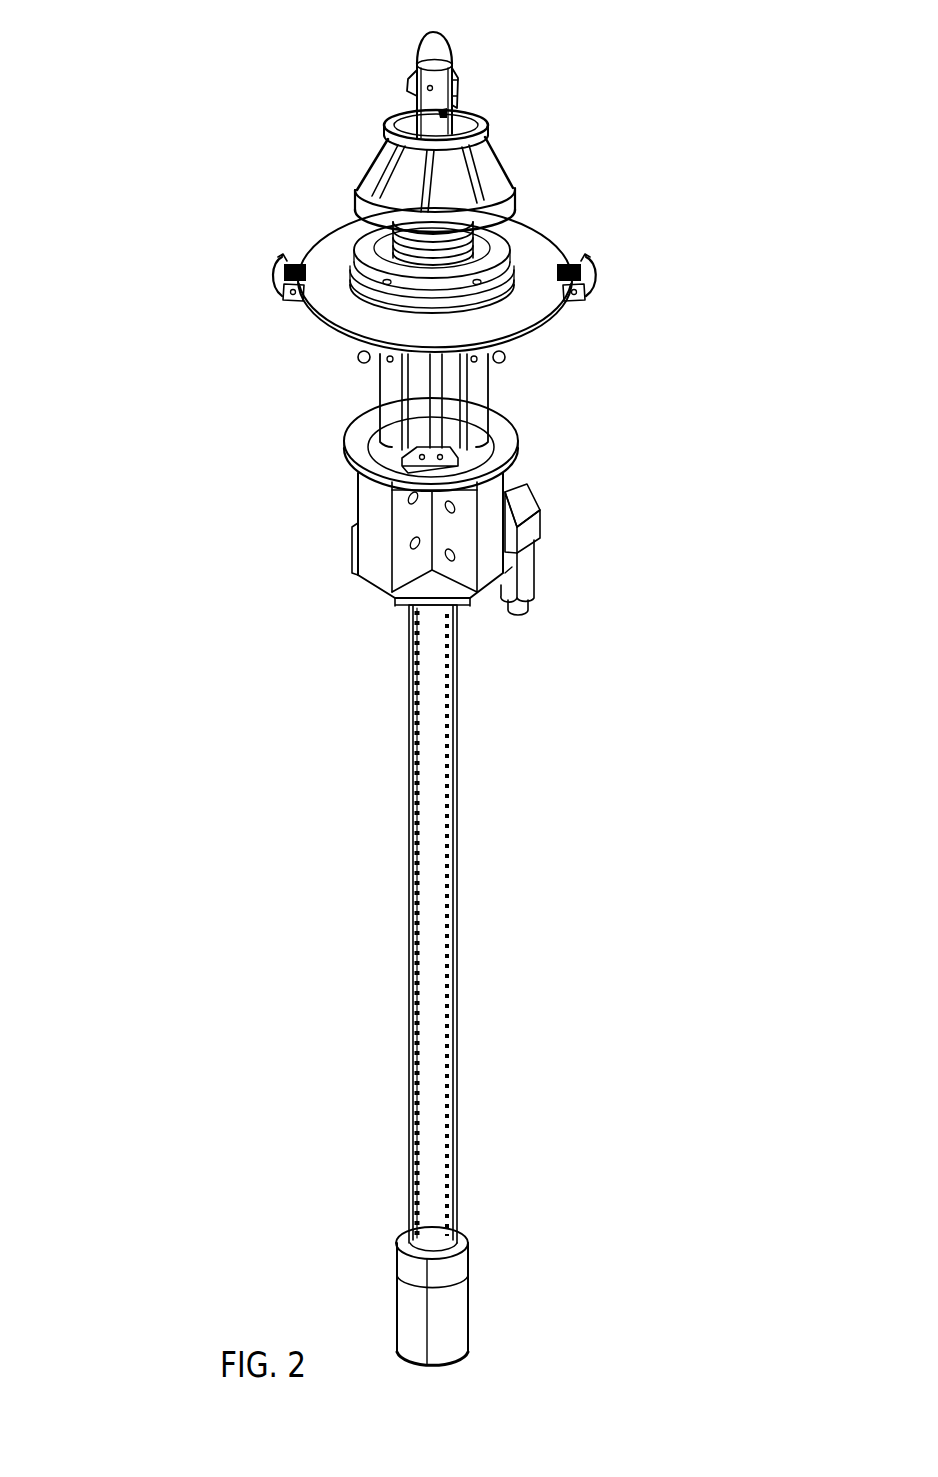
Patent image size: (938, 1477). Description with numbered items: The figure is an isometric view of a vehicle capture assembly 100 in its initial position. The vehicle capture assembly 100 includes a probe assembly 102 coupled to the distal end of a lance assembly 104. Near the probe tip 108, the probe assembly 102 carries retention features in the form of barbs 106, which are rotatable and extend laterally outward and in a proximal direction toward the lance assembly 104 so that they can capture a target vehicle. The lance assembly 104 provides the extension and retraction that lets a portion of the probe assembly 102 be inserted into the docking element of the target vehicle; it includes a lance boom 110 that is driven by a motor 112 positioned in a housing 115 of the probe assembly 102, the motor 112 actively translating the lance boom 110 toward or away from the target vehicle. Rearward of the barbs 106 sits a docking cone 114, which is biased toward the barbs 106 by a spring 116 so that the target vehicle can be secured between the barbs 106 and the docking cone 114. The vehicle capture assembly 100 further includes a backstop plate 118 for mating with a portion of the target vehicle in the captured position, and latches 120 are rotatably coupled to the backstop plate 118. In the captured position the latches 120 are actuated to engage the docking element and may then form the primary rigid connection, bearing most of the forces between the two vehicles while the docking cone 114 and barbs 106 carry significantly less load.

The vehicle capture assembly 100 is at (160, 90).
The probe assembly 102 is at (546, 193).
The lance assembly 104 is at (320, 522).
The barbs 106 is at (407, 80).
The probe tip 108 is at (425, 47).
The lance boom 110 is at (433, 752).
The motor 112 is at (520, 535).
The docking cone 114 is at (386, 158).
The housing 115 is at (393, 420).
The spring 116 is at (362, 229).
The backstop plate 118 is at (488, 327).
The latches 120 is at (270, 272).